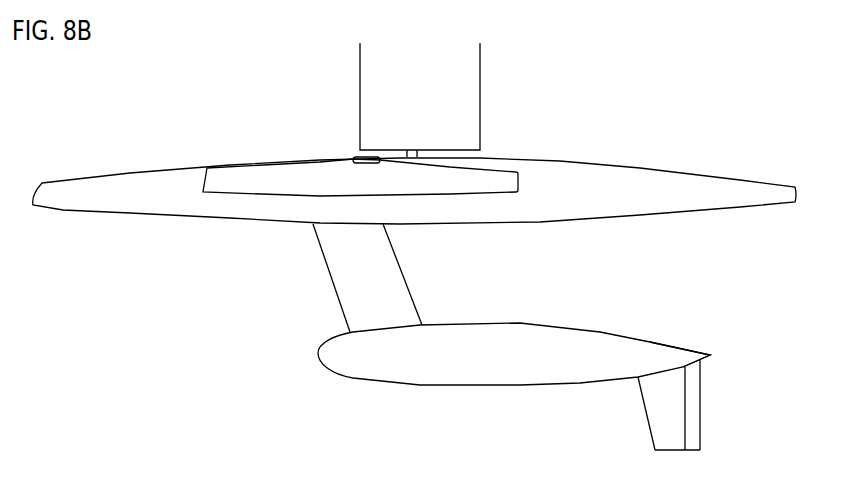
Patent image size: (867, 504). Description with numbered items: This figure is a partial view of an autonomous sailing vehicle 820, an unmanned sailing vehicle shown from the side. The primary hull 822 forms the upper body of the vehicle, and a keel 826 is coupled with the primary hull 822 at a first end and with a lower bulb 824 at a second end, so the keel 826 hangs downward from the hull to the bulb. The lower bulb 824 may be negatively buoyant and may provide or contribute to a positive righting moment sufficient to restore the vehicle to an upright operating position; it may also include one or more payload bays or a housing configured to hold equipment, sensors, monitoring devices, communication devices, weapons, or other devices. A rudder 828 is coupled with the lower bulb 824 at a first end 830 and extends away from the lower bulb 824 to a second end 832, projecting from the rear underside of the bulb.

The autonomous sailing vehicle 820 is at (722, 98).
The primary hull 822 is at (649, 190).
The lower bulb 824 is at (530, 355).
The keel 826 is at (373, 285).
The rudder 828 is at (663, 425).
The first end of rudder 830 is at (707, 360).
The second end of rudder 832 is at (710, 448).